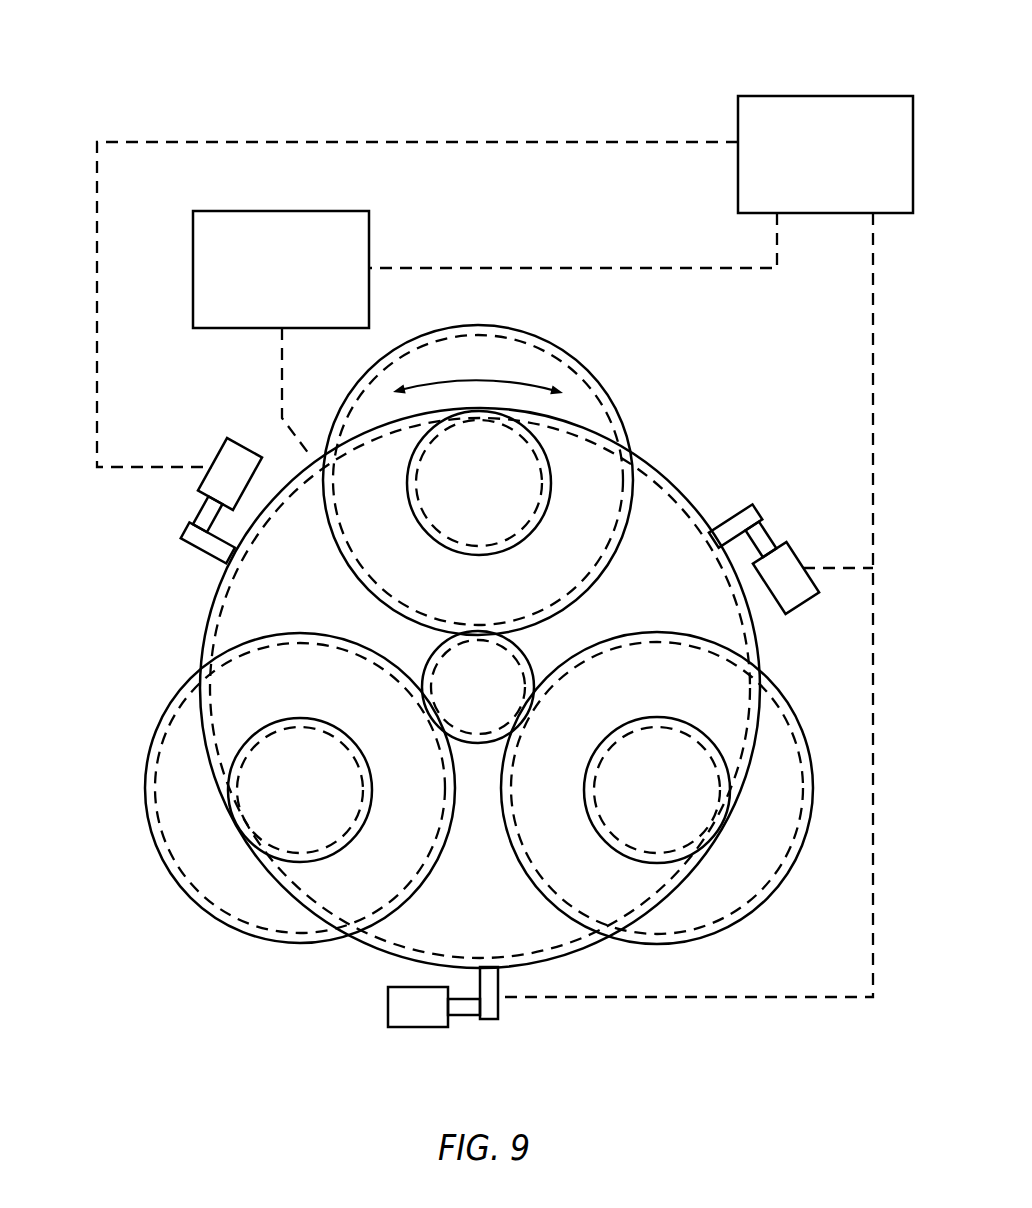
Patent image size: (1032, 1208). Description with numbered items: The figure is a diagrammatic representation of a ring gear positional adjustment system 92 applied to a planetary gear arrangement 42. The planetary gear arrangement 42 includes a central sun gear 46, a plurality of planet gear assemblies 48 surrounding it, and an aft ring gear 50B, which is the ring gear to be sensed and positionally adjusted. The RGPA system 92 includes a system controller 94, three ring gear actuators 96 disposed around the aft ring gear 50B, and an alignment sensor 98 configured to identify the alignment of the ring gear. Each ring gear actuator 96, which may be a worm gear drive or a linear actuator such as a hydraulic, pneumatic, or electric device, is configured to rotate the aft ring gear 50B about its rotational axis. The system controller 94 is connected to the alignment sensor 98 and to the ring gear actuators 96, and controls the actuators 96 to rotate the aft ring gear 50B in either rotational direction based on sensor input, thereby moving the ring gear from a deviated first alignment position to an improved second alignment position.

The ring gear positional adjustment (RGPA) system 92 is at (682, 90).
The system controller 94 is at (812, 198).
The sensor 98 is at (268, 314).
The planetary gear arrangement 42 is at (98, 596).
The aft ring gear 50B is at (648, 462).
The planet gear assembly 48 is at (576, 334).
The sun gear 46 is at (464, 699).
The ring gear actuator 96 is at (217, 458).